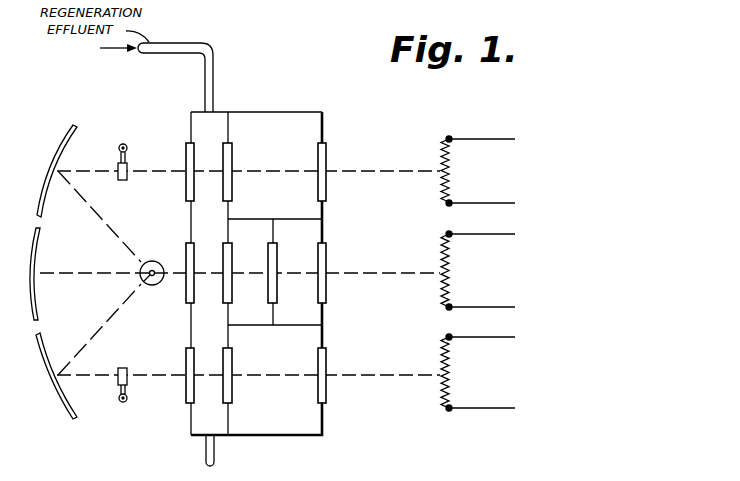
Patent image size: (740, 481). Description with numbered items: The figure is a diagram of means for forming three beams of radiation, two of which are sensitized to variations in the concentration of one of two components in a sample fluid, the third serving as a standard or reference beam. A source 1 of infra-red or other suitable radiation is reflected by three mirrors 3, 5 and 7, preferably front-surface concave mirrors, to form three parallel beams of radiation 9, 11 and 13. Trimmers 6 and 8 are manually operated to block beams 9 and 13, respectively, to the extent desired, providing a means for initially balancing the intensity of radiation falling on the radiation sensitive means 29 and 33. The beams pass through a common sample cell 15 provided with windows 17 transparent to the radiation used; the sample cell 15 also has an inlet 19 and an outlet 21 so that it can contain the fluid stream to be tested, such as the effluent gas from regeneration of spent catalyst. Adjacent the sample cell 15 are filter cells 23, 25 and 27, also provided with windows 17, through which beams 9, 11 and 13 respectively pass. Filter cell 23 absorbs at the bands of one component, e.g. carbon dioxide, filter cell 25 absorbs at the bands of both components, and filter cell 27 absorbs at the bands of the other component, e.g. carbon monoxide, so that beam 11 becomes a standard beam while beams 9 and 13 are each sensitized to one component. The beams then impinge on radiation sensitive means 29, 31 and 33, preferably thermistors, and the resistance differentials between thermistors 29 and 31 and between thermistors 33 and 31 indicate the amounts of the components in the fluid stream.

The source 1 is at (153, 285).
The mirror 3 is at (74, 405).
The mirror 5 is at (42, 248).
The trimmer 6 is at (119, 181).
The mirror 7 is at (72, 151).
The trimmer 8 is at (128, 398).
The beam of radiation 9 is at (148, 174).
The beam of radiation 11 is at (108, 270).
The beam of radiation 13 is at (146, 375).
The sample cell 15 is at (191, 213).
The windows 17 is at (186, 151).
The inlet 19 is at (215, 77).
The outlet 21 is at (216, 459).
The filter cell 23 is at (305, 112).
The filter cell 25 is at (323, 232).
The filter cell 27 is at (323, 335).
The radiation sensitive means 29 is at (441, 142).
The radiation sensitive means 31 is at (441, 248).
The radiation sensitive means 33 is at (441, 336).